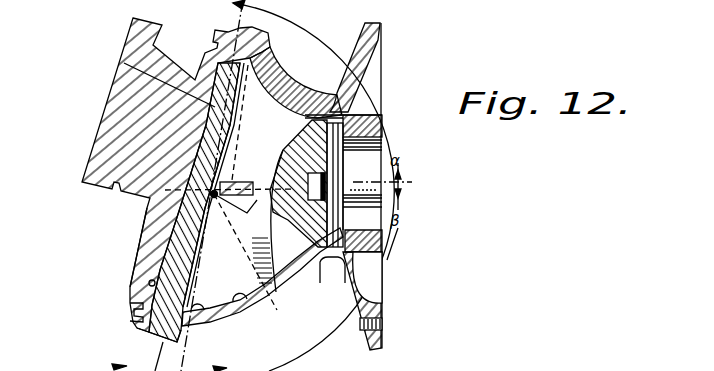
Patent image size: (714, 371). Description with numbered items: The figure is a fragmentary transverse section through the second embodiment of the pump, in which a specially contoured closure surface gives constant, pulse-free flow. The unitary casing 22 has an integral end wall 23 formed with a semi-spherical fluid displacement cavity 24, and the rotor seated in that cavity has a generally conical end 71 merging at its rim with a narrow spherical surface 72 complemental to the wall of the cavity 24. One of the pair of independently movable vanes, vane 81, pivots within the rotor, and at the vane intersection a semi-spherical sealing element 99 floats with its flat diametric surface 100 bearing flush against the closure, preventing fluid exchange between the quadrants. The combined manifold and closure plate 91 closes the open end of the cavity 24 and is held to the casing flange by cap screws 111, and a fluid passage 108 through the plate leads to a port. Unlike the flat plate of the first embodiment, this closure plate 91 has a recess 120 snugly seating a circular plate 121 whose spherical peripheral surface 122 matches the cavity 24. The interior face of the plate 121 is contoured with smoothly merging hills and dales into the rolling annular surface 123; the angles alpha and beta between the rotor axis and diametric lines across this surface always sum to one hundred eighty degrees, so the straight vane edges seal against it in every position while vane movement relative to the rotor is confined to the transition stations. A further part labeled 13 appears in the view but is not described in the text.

The fluid passage 108 is at (108, 138).
The flat diametric surface 100 is at (160, 203).
The combined manifold and closure plate 91 is at (143, 245).
The circular plate 121 is at (157, 265).
The recess 120 is at (149, 284).
The cap screws 111 is at (130, 322).
The spherical peripheral surface 122 is at (141, 335).
The sealing element 99 is at (216, 192).
The conical end 71 is at (225, 230).
The vane 81 is at (270, 240).
The flange 13 is at (244, 4).
The unitary casing 22 is at (355, 323).
The end wall 23 is at (328, 278).
The spherical surface 72 is at (270, 298).
The rolling annular surface 123 is at (200, 313).
The fluid displacement cavity 24 is at (240, 306).